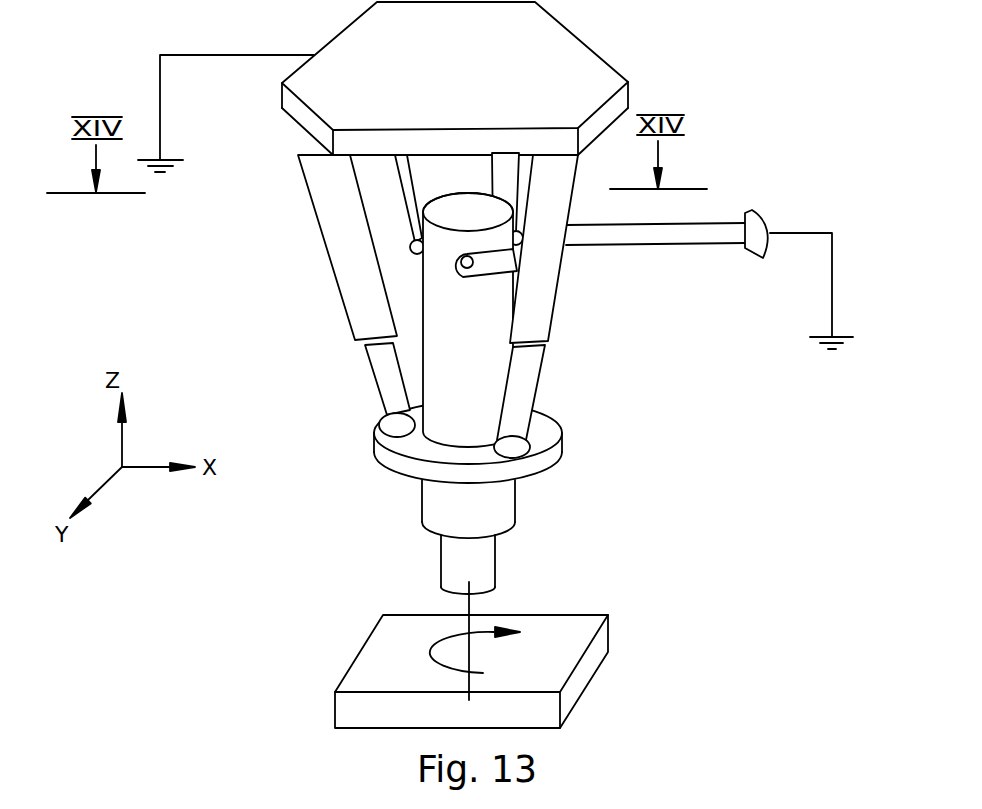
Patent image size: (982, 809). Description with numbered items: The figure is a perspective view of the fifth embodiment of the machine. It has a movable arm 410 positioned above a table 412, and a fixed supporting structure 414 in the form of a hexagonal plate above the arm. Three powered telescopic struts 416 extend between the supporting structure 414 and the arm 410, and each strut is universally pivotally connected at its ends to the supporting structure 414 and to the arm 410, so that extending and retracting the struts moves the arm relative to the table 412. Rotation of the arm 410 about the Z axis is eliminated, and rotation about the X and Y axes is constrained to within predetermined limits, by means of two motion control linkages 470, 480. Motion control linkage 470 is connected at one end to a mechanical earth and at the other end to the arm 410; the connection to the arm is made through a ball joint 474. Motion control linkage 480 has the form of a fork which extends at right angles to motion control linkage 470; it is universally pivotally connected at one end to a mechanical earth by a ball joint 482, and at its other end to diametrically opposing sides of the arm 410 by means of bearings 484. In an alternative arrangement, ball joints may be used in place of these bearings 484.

The movable arm 410 is at (498, 507).
The table 412 is at (560, 617).
The fixed supporting structure 414 is at (482, 78).
The powered telescopic struts 416 is at (514, 167).
The motion control linkage 470 is at (405, 178).
The ball joint 474 is at (411, 241).
The motion control linkage 480 is at (722, 228).
The ball joint 482 is at (757, 217).
The bearings 484 is at (460, 280).